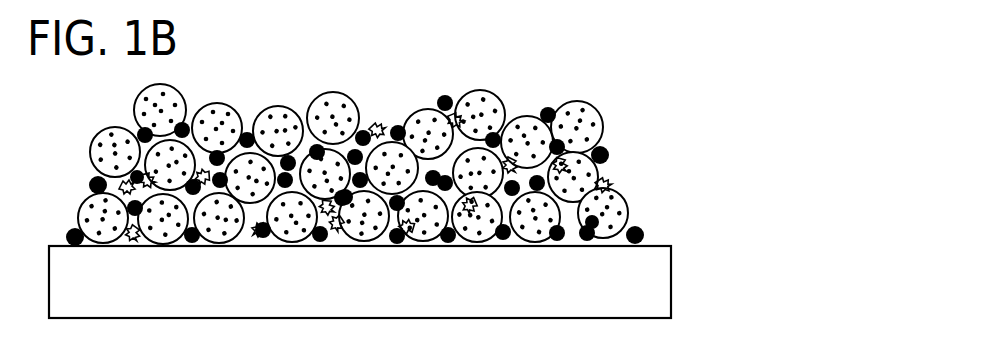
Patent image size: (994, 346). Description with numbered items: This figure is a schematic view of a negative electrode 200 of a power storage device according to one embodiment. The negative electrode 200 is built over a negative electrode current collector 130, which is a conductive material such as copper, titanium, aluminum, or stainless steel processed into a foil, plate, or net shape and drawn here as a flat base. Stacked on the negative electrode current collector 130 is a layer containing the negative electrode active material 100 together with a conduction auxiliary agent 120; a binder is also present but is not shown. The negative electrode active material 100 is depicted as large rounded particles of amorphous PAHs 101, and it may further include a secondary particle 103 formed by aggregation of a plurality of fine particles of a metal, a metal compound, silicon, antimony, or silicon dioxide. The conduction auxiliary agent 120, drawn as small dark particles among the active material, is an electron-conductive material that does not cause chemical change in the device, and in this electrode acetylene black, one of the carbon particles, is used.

The amorphous PAHs 101 is at (605, 140).
The secondary particle 103 is at (607, 190).
The conduction auxiliary agent 120 is at (637, 230).
The negative electrode current collector 130 is at (638, 285).
The negative electrode active material 100 is at (456, 163).
The negative electrode 200 is at (484, 195).